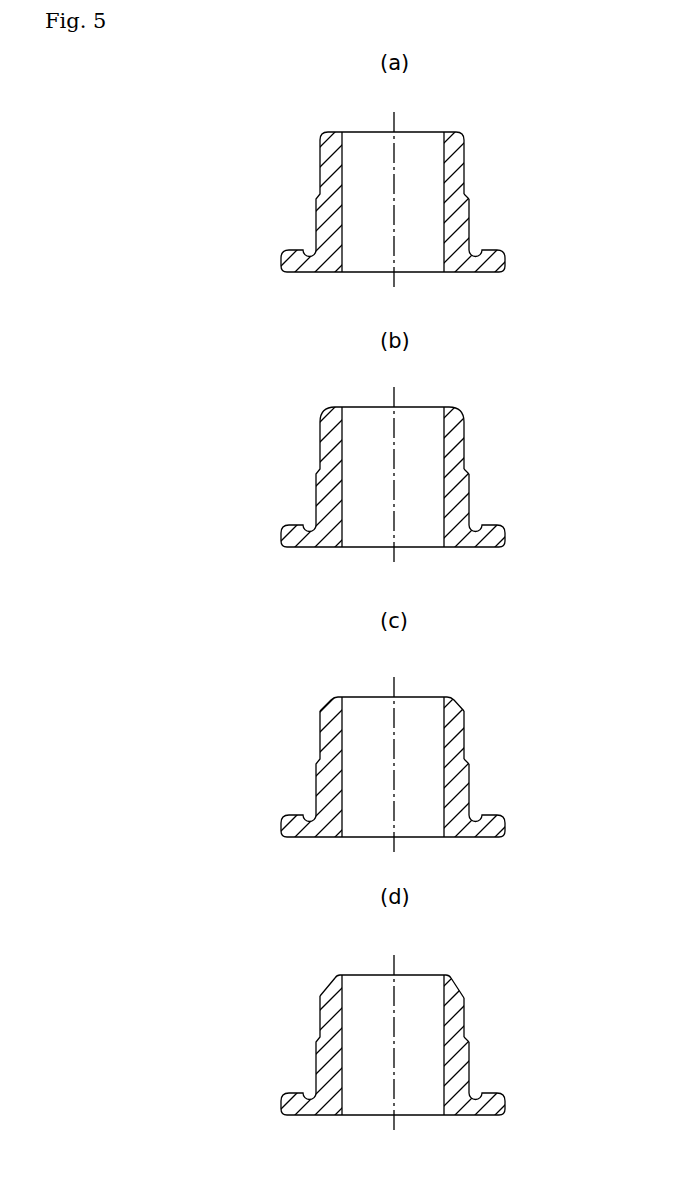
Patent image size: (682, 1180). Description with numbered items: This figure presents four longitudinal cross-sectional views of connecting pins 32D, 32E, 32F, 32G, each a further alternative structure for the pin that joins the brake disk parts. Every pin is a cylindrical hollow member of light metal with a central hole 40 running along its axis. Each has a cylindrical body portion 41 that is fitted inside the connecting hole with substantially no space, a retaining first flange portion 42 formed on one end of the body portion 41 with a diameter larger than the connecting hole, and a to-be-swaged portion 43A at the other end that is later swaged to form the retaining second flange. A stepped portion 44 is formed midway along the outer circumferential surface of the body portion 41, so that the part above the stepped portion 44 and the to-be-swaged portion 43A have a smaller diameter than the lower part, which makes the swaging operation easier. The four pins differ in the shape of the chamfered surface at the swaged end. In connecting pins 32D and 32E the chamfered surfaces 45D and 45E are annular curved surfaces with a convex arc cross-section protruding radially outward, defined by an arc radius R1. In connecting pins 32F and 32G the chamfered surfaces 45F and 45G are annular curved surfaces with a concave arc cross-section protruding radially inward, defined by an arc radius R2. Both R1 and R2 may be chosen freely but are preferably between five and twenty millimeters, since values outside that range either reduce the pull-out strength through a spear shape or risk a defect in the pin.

The connecting pin 32D is at (534, 101).
The connecting pin 32E is at (392, 459).
The connecting pin 32F is at (392, 749).
The connecting pin 32G is at (392, 1027).
The central hole 40 is at (342, 249).
The body portion 41 is at (471, 220).
The first flange portion 42 is at (490, 267).
The to-be-swaged portion 43A is at (466, 156).
The stepped portion 44 is at (467, 193).
The chamfered surface 45D is at (463, 133).
The chamfered surface 45E is at (496, 386).
The chamfered surface 45F is at (494, 675).
The chamfered surface 45G is at (495, 958).
The arc radius R1 is at (330, 147).
The arc radius R2 is at (314, 827).